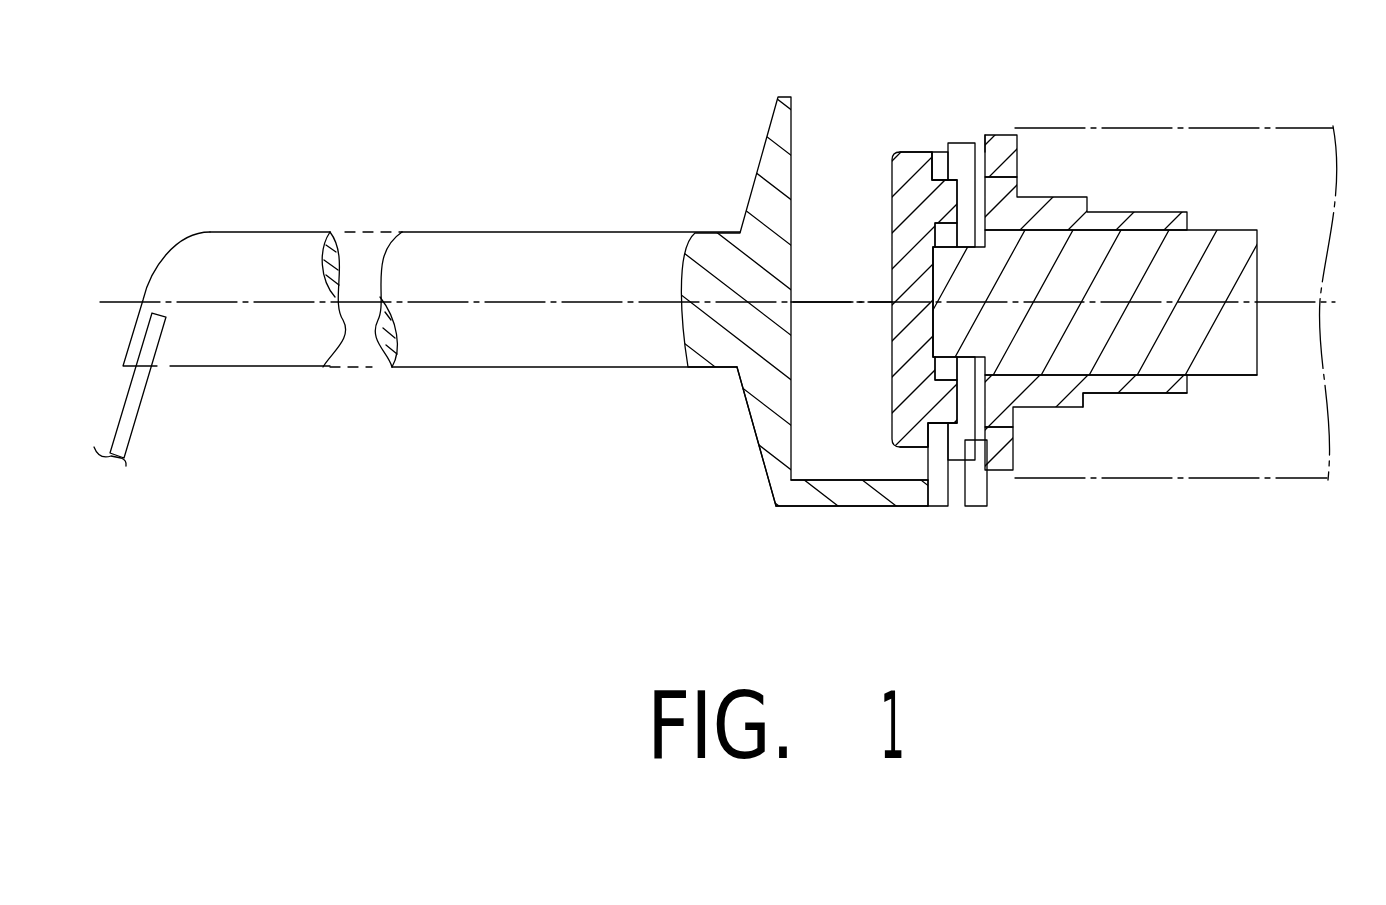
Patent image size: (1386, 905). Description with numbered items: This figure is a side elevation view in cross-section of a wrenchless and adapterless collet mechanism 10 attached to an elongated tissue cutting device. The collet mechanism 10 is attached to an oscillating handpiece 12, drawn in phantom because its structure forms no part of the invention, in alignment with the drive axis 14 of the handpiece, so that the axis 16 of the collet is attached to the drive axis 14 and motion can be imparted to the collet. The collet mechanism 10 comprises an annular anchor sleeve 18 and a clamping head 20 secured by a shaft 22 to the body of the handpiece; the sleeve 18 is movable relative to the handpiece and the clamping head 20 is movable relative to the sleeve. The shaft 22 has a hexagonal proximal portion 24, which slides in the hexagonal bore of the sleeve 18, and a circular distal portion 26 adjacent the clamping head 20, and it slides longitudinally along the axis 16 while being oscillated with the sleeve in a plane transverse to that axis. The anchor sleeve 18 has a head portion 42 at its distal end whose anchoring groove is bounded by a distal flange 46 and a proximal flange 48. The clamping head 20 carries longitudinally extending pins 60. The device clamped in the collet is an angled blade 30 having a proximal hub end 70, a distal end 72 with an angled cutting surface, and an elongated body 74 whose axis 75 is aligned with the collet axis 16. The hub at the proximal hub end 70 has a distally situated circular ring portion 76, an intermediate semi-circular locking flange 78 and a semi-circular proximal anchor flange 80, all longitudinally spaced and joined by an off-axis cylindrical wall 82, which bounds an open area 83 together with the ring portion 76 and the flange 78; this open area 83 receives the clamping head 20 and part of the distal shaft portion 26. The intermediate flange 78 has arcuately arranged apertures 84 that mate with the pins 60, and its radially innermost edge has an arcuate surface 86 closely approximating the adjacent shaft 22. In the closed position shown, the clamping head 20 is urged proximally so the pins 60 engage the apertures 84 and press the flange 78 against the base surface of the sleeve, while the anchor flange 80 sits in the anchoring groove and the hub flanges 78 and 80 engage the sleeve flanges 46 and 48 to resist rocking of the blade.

The wrenchless collet mechanism 10 is at (962, 130).
The oscillating handpiece 12 is at (1195, 152).
The drive axis 14 is at (1340, 300).
The axis of the collet mechanism 16 is at (937, 280).
The annular anchor sleeve 18 is at (1013, 123).
The clamping head 20 is at (902, 155).
The shaft 22 is at (1185, 361).
The proximal portion 24 is at (940, 152).
The distal portion 26 is at (1030, 350).
The angled blade 30 is at (760, 468).
The head portion 42 is at (1013, 455).
The distal flange 46 is at (962, 143).
The proximal flange 48 is at (1005, 155).
The pins 60 is at (933, 203).
The proximal hub end 70 is at (803, 507).
The distal end 72 is at (181, 244).
The elongated body 74 is at (523, 370).
The axis 75 is at (547, 300).
The circular ring portion 76 is at (773, 397).
The intermediate semi-circular locking flange 78 is at (937, 483).
The semi-circular proximal anchor flange 80 is at (977, 470).
The off-axis cylindrical wall 82 is at (860, 507).
The open area 83 is at (850, 406).
The apertures 84 is at (940, 387).
The arcuate surface 86 is at (937, 357).